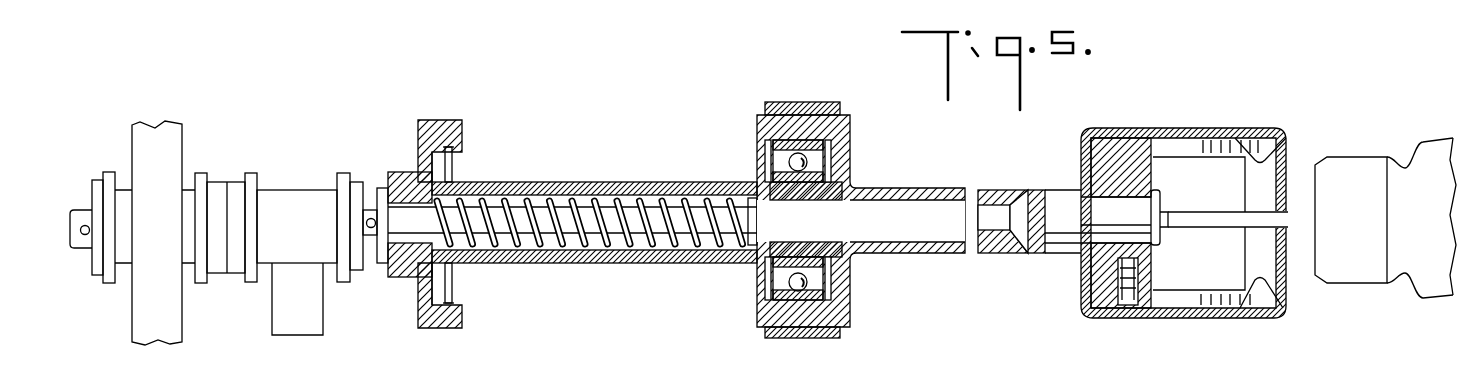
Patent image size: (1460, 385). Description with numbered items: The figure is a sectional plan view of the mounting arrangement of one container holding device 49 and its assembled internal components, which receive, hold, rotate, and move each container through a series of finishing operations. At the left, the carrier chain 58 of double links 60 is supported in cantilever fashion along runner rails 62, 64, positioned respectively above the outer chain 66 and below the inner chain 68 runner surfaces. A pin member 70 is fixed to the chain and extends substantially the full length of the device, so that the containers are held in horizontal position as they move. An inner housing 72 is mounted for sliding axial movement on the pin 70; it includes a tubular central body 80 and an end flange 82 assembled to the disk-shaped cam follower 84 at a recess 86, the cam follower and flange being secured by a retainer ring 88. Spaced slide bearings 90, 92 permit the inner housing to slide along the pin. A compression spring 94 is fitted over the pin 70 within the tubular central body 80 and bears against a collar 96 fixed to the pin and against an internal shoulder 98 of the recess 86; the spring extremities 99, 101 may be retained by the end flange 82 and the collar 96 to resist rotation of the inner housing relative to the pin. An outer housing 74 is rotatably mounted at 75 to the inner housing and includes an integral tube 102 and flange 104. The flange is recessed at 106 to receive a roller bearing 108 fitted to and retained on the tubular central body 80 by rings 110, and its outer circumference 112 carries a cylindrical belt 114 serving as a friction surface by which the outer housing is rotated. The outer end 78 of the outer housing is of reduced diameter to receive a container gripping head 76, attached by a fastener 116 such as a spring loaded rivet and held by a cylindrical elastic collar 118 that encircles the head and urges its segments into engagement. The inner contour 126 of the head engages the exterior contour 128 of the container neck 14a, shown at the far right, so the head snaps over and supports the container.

The container neck 14a is at (1370, 157).
The container holding device 49 is at (647, 157).
The carrier chain 58 is at (303, 128).
The double links 60 is at (303, 197).
The runner rail 62 is at (168, 142).
The runner rail 64 is at (302, 332).
The outer chain 66 is at (112, 283).
The inner chain 68 is at (253, 282).
The pin member 70 is at (372, 210).
The inner housing 72 is at (677, 173).
The outer housing 74 is at (892, 188).
The rotatable mounting 75 is at (858, 113).
The container gripping head 76 is at (1240, 103).
The outer end 78 is at (1090, 182).
The tubular central body 80 is at (538, 182).
The end flange 82 is at (418, 300).
The cam follower 84 is at (445, 120).
The recess 86 is at (462, 158).
The retainer ring 88 is at (462, 292).
The slide bearing 90 is at (395, 277).
The slide bearing 92 is at (842, 247).
The compression spring 94 is at (587, 248).
The collar 96 is at (752, 263).
The internal shoulder 98 is at (418, 185).
The spring extremity 99 is at (463, 263).
The spring extremity 101 is at (713, 262).
The tube 102 is at (930, 250).
The flange 104 is at (852, 323).
The recess 106 is at (815, 337).
The roller bearing 108 is at (773, 340).
The rings 110 is at (752, 137).
The outer circumference 112 is at (755, 343).
The cylindrical belt 114 is at (840, 340).
The fastener 116 is at (1107, 317).
The elastic collar 118 is at (1247, 318).
The inner contour 126 is at (1230, 148).
The exterior contour 128 is at (1403, 277).